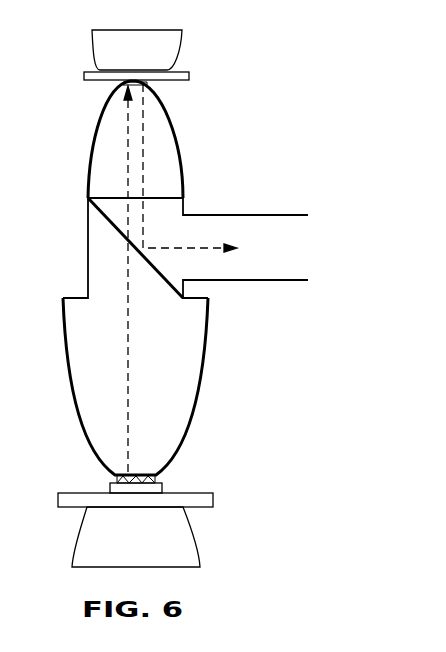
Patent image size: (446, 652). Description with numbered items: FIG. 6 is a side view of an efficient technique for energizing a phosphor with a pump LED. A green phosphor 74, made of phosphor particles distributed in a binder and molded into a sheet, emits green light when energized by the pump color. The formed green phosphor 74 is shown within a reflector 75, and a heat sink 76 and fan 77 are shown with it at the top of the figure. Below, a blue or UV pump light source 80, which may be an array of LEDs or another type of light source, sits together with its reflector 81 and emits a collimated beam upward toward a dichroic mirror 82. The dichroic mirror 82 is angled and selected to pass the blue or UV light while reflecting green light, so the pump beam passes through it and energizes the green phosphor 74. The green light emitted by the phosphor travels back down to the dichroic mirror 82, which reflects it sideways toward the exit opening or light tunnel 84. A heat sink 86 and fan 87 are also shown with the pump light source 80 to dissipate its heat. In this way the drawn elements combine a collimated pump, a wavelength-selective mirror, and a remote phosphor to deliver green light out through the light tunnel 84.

The green phosphor 74 is at (147, 86).
The reflector 75 is at (183, 176).
The heat sink 76 is at (189, 78).
The fan 77 is at (180, 43).
The blue or UV pump light source 80 is at (238, 352).
The reflector 81 is at (200, 392).
The dichroic mirror 82 is at (110, 223).
The exit opening or light tunnel 84 is at (320, 258).
The heat sink 86 is at (213, 500).
The fan 87 is at (148, 552).